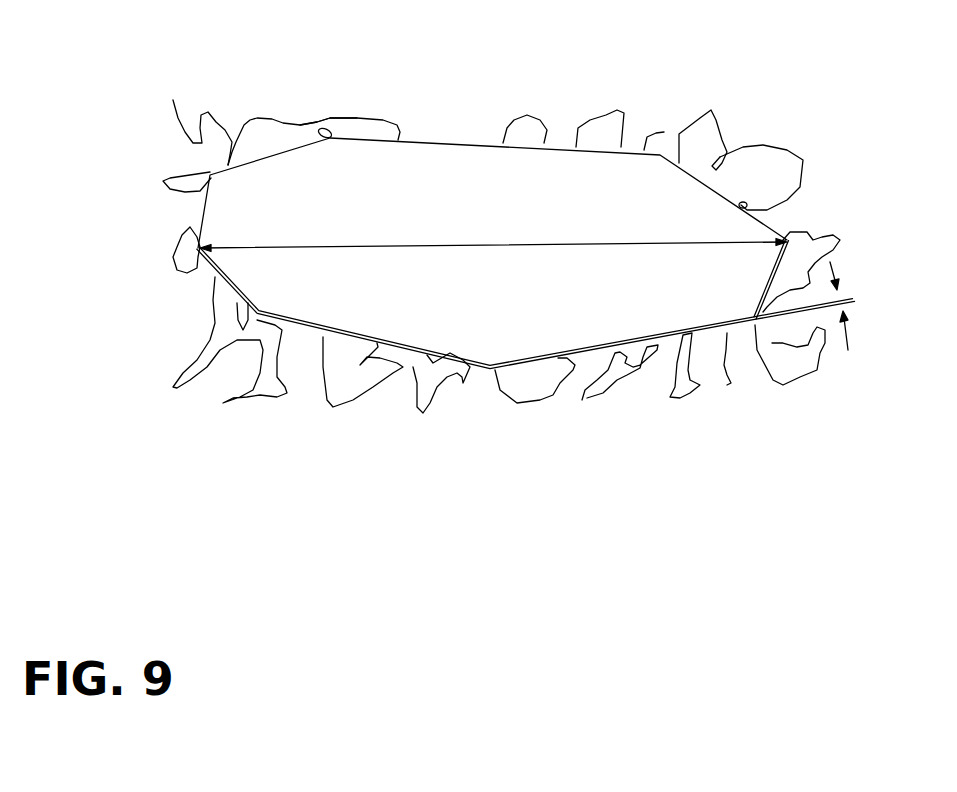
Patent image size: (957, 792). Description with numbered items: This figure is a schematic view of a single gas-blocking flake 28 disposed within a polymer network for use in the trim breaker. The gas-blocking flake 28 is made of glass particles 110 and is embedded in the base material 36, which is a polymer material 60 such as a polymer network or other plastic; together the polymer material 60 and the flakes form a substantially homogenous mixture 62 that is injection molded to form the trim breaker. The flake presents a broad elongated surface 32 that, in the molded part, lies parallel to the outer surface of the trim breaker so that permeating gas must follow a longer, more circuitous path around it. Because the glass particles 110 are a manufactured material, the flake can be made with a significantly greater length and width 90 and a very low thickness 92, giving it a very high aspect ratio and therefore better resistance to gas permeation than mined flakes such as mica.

The gas-blocking flake 28 is at (433, 137).
The elongated surface 32 is at (352, 224).
The base material 36 is at (636, 109).
The polymer material 60 is at (215, 323).
The homogenous mixture 62 is at (330, 101).
The length and width 90 is at (503, 245).
The thickness 92 is at (849, 334).
The glass particles 110 is at (685, 305).